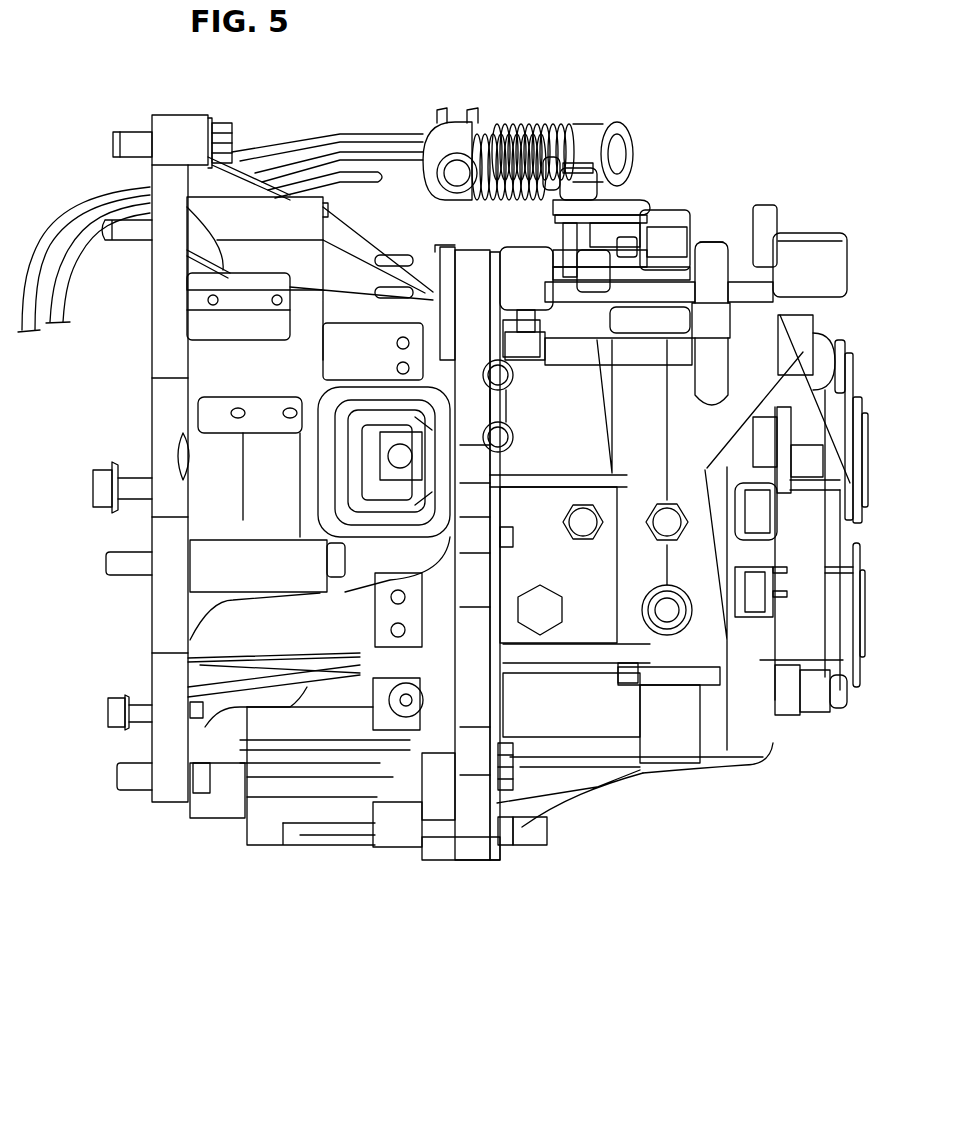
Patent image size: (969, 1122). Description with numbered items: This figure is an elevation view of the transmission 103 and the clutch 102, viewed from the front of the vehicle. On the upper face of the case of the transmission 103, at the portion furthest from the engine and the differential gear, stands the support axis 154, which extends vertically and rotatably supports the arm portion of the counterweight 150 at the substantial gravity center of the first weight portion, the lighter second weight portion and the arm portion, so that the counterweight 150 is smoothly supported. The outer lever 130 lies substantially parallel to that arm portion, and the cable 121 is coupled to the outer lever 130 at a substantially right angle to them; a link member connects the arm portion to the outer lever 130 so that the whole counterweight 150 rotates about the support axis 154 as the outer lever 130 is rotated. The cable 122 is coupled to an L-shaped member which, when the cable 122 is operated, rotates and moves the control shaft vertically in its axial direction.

The clutch 102 is at (332, 863).
The transmission 103 is at (675, 813).
The cable 121 is at (377, 167).
The cable 122 is at (363, 140).
The outer lever 130 is at (633, 203).
The counterweight 150 is at (807, 247).
The support axis 154 is at (707, 242).